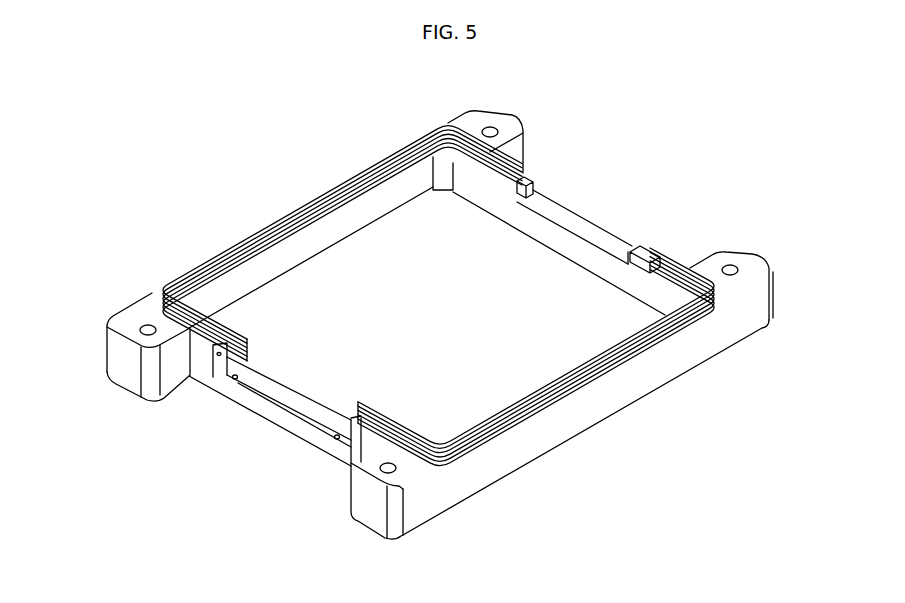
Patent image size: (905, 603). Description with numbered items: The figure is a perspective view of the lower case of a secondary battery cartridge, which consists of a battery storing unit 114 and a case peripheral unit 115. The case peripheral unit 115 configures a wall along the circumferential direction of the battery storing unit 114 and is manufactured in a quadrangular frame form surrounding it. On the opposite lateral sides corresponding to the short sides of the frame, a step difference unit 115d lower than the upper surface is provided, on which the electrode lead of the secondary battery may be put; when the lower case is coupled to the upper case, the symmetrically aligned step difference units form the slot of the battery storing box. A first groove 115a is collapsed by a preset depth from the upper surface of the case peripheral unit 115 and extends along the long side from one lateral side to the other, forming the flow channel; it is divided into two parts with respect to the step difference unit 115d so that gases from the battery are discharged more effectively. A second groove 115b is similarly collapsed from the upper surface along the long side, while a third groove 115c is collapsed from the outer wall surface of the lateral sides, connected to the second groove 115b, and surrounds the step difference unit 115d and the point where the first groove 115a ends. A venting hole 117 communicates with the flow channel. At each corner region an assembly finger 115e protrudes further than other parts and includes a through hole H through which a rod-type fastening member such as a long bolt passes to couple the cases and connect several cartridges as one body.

The battery storing unit 114 is at (413, 260).
The case peripheral unit 115 is at (508, 458).
The first groove 115a is at (237, 257).
The second groove 115b is at (283, 226).
The third groove 115c is at (241, 392).
The step difference unit 115d is at (588, 234).
The assembly finger 115e is at (524, 149).
The venting hole 117 is at (215, 355).
The through hole H is at (491, 128).